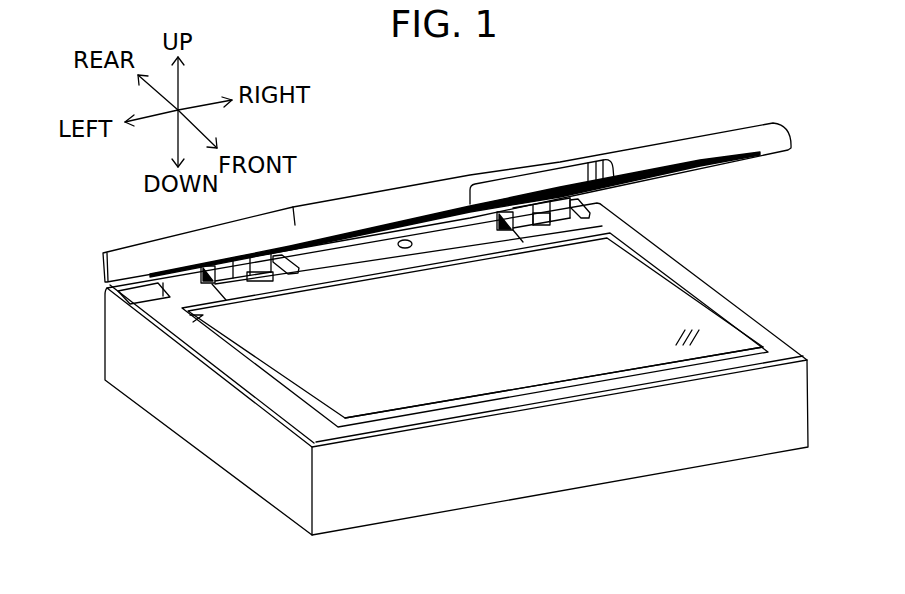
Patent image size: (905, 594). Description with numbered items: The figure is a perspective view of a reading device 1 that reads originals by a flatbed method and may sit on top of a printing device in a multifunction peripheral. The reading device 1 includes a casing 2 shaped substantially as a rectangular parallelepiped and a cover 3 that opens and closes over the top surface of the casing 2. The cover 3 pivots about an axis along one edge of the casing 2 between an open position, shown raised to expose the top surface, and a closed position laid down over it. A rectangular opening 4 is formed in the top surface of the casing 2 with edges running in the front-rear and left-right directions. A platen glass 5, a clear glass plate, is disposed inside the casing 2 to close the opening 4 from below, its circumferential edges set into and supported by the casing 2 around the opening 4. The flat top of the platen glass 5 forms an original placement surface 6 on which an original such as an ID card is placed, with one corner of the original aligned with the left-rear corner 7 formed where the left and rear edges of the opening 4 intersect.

The reading device 1 is at (455, 343).
The casing 2 is at (712, 452).
The cover 3 is at (424, 182).
The opening 4 is at (475, 402).
The platen glass 5 is at (647, 298).
The original placement surface 6 is at (539, 345).
The left-rear corner 7 is at (195, 312).